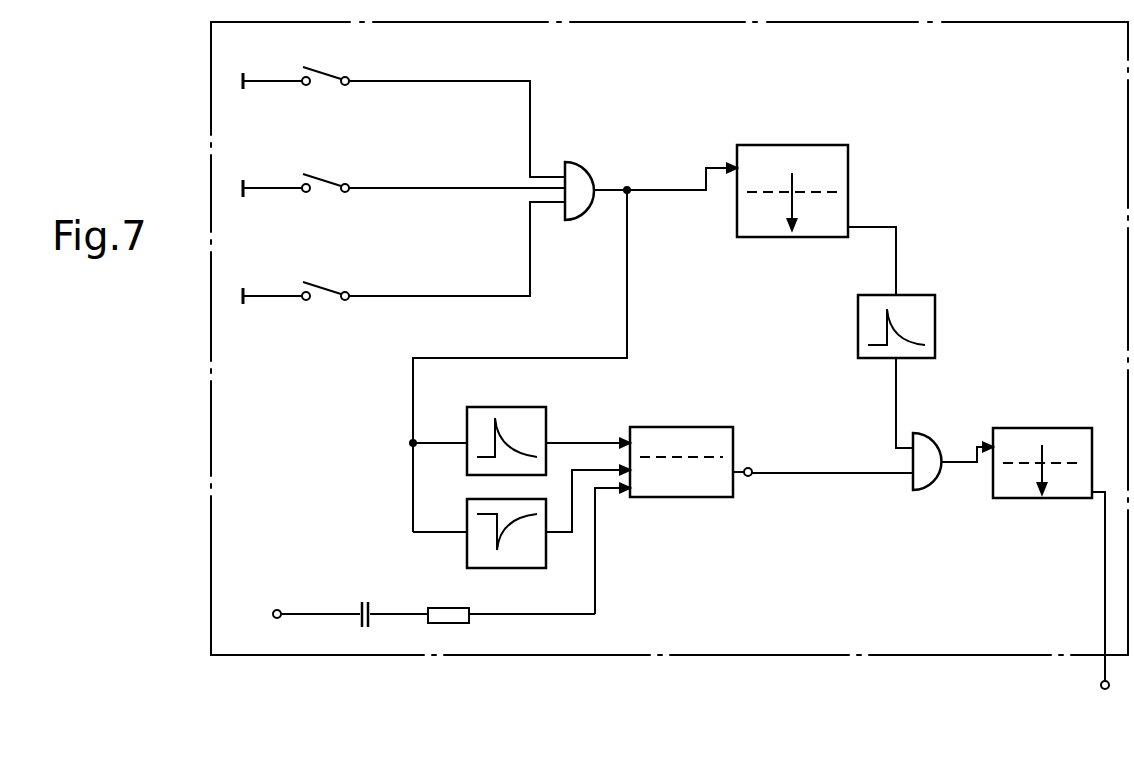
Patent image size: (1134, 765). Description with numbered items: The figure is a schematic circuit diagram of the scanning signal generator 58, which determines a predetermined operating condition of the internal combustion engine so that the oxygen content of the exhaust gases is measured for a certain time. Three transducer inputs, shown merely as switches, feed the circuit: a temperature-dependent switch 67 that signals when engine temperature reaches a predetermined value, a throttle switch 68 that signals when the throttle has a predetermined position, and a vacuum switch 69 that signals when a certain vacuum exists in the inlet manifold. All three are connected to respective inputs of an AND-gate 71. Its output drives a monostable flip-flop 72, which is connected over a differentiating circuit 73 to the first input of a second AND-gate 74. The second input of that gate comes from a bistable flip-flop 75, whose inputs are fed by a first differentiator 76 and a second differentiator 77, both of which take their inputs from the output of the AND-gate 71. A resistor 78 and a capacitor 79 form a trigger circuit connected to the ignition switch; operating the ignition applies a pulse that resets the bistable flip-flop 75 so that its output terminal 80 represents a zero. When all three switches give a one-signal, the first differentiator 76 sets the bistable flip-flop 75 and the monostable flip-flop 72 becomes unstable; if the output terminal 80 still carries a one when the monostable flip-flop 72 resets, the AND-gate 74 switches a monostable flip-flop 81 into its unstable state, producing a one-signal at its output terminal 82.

The scanning signal generator 58 is at (669, 669).
The temperature-dependent switch 67 is at (333, 75).
The throttle switch 68 is at (333, 182).
The vacuum switch 69 is at (327, 288).
The AND-gate 71 is at (580, 175).
The monostable flip-flop 72 is at (850, 153).
The differentiating circuit 73 is at (930, 320).
The AND-gate 74 is at (932, 443).
The bistable flip-flop 75 is at (690, 489).
The first differentiator 76 is at (548, 418).
The second differentiator 77 is at (470, 546).
The resistor 78 is at (448, 620).
The capacitor 79 is at (370, 610).
The output terminal 80 is at (750, 468).
The monostable flip-flop 81 is at (1028, 494).
The output terminal 82 is at (1101, 686).